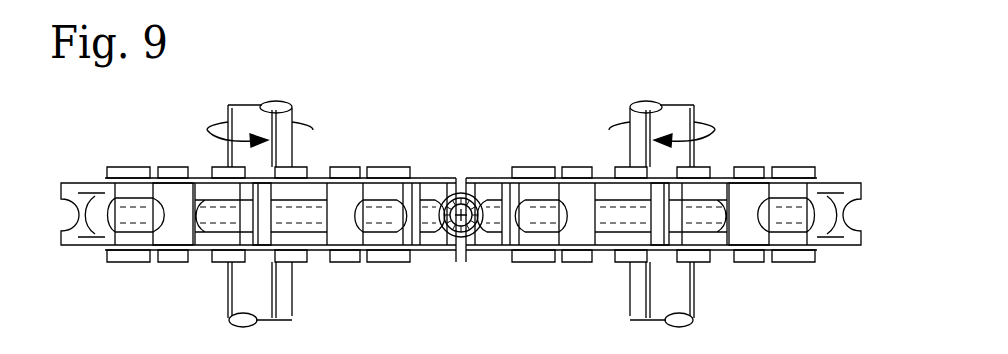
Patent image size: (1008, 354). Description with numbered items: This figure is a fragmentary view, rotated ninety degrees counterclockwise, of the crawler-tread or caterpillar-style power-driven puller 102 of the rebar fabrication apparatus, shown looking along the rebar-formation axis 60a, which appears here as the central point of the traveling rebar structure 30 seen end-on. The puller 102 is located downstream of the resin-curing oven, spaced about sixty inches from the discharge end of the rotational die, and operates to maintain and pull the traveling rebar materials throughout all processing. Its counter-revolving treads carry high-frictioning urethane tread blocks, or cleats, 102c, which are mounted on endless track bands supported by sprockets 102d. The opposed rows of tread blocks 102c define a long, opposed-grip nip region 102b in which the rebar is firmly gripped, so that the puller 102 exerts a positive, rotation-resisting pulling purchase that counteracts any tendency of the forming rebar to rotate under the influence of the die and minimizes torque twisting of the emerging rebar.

The puller 102 is at (757, 54).
The nip region 102b is at (457, 258).
The tread blocks 102c is at (173, 190).
The sprocket 102d is at (259, 237).
The ball joint 30 is at (455, 195).
The rebar-formation axis 60a is at (464, 212).